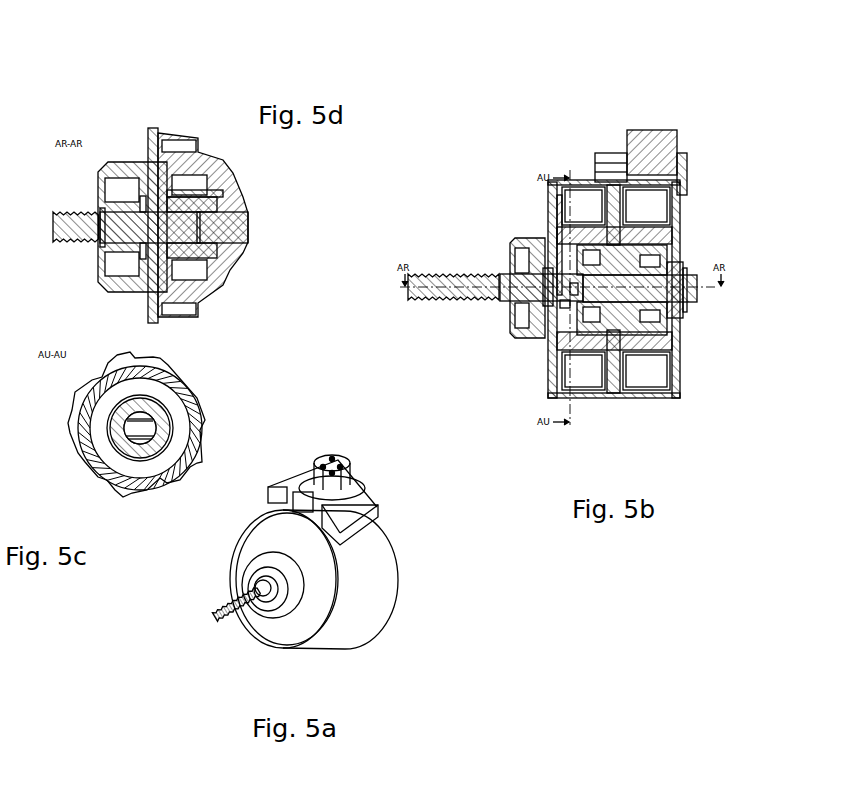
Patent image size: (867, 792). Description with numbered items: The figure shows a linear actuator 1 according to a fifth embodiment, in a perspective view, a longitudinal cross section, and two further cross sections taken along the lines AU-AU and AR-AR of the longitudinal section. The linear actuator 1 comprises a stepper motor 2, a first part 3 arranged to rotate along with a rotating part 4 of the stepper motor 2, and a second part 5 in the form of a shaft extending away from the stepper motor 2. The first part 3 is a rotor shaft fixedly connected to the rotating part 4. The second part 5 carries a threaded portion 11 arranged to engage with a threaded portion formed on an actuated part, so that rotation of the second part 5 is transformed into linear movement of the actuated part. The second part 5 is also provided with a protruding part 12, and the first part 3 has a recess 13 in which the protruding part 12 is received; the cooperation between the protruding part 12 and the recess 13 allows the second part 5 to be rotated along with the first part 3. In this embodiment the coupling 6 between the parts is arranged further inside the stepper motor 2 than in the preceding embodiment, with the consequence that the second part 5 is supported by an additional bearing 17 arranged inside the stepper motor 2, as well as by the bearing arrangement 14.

In FIG. 5A, the linear actuator 1 is at (313, 579).
In FIG. 5B, the linear actuator 1 is at (574, 237).
In FIG. 5A, the stepper motor 2 is at (375, 570).
In FIG. 5B, the stepper motor 2 is at (647, 370).
In FIG. 5D, the first part 3 is at (228, 233).
In FIG. 5C, the first part 3 is at (135, 445).
In FIG. 5B, the first part 3 is at (663, 282).
In FIG. 5B, the rotating part 4 is at (622, 317).
In FIG. 5D, the second part 5 is at (88, 222).
In FIG. 5A, the second part 5 is at (267, 596).
In FIG. 5B, the second part 5 is at (575, 277).
In FIG. 5D, the coupling 6 is at (170, 128).
In FIG. 5C, the coupling 6 is at (187, 387).
In FIG. 5B, the coupling 6 is at (563, 298).
In FIG. 5D, the threaded portion 11 is at (63, 243).
In FIG. 5A, the threaded portion 11 is at (215, 615).
In FIG. 5B, the threaded portion 11 is at (443, 275).
In FIG. 5C, the protruding part 12 is at (143, 430).
In FIG. 5B, the protruding part 12 is at (557, 213).
In FIG. 5C, the recess 13 is at (152, 440).
In FIG. 5B, the recess 13 is at (577, 292).
In FIG. 5D, the bearing arrangement 14 is at (122, 187).
In FIG. 5A, the bearing arrangement 14 is at (295, 592).
In FIG. 5B, the bearing arrangement 14 is at (527, 260).
In FIG. 5D, the additional bearing 17 is at (173, 203).
In FIG. 5B, the additional bearing 17 is at (568, 310).